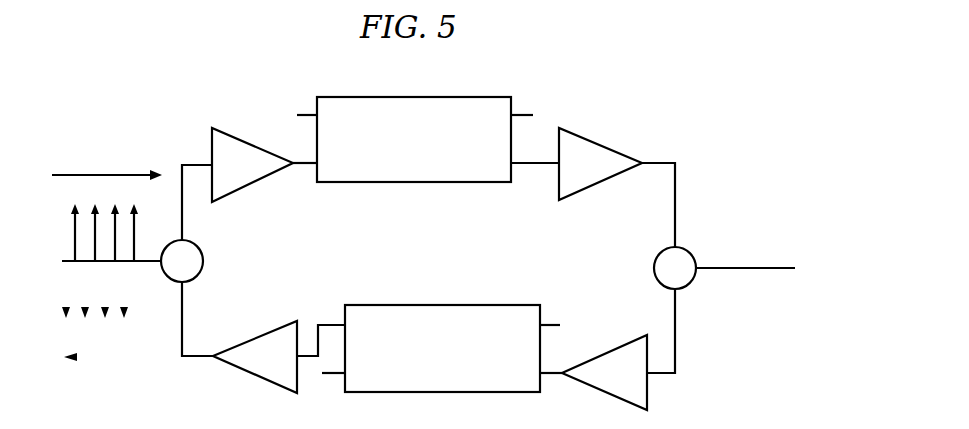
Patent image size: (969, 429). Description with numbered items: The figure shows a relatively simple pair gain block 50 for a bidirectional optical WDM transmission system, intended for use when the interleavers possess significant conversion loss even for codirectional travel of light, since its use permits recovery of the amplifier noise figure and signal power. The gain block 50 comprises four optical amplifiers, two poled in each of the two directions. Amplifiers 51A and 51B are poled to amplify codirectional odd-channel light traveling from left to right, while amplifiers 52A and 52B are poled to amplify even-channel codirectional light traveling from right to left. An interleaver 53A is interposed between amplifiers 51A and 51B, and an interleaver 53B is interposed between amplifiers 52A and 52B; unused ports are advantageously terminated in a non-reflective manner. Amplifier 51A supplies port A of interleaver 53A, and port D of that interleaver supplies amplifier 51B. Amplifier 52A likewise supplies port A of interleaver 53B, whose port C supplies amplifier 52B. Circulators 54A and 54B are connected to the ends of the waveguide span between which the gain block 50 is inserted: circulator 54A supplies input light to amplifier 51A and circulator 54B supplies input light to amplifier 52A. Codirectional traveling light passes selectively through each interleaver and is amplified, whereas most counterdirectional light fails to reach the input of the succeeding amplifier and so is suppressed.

The pair gain block 50 is at (441, 69).
The optical amplifier 51A is at (255, 146).
The optical amplifier 51B is at (605, 147).
The optical amplifier 52A is at (607, 352).
The optical amplifier 52B is at (258, 337).
The interleaver 53A is at (412, 183).
The interleaver 53B is at (447, 305).
The circulator 54A is at (204, 256).
The circulator 54B is at (692, 252).